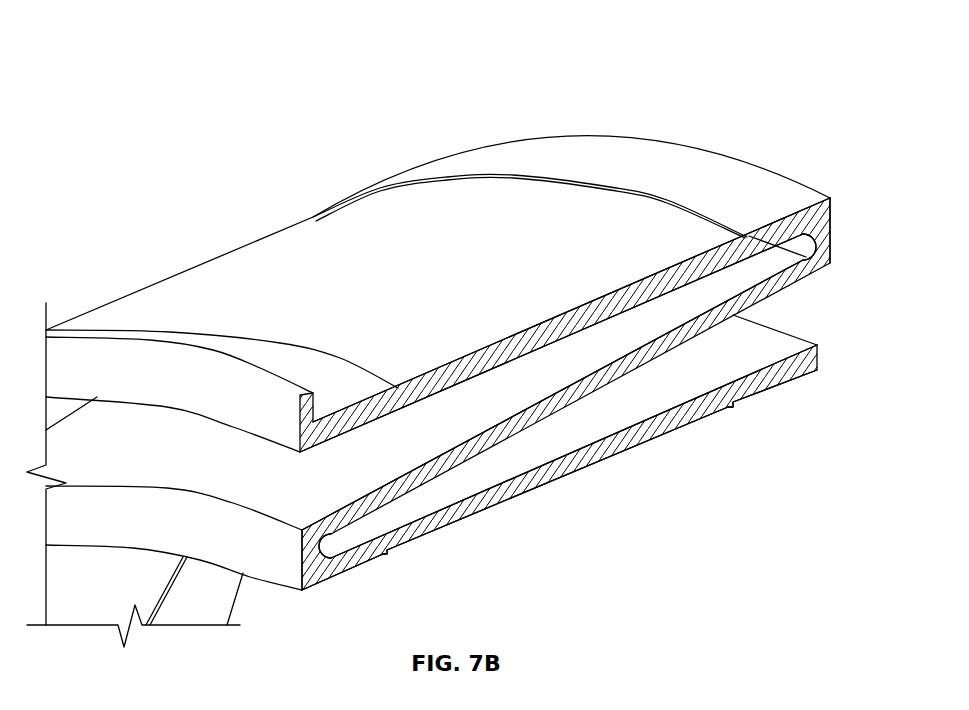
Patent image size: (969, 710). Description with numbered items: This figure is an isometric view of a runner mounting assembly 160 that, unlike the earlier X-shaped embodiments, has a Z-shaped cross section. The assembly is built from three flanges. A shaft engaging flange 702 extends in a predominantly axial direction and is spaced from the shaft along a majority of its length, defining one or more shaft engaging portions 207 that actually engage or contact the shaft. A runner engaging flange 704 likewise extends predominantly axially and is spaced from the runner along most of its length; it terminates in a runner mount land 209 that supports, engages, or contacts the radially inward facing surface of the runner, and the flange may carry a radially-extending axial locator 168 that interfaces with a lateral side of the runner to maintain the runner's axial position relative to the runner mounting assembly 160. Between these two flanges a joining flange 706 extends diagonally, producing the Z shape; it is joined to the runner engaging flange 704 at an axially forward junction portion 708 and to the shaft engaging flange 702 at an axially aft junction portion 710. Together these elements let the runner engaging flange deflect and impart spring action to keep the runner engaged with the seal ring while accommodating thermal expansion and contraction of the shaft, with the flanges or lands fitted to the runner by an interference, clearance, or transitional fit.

The runner mounting assembly 160 is at (810, 64).
The axial locator 168 is at (220, 393).
The shaft engaging portion 207 is at (782, 385).
The runner mount land 209 is at (318, 372).
The shaft engaging flange 702 is at (593, 463).
The runner engaging flange 704 is at (648, 282).
The joining flange 706 is at (653, 348).
The axially forward junction portion 708 is at (822, 228).
The axially aft junction portion 710 is at (306, 553).